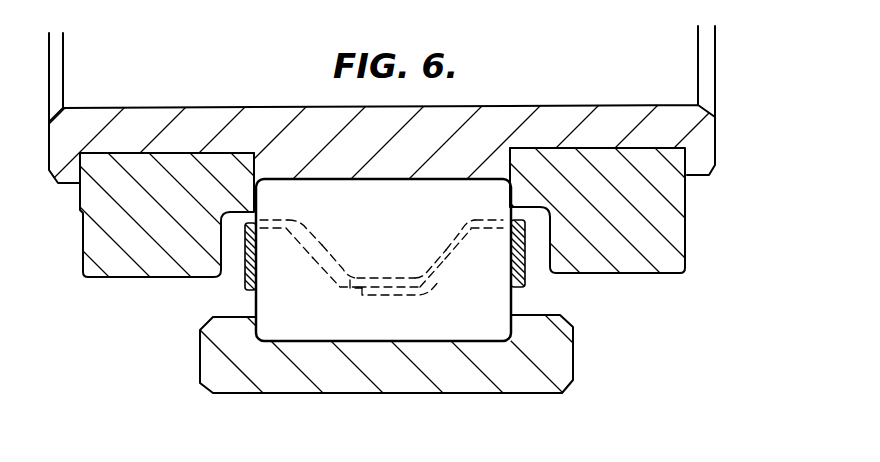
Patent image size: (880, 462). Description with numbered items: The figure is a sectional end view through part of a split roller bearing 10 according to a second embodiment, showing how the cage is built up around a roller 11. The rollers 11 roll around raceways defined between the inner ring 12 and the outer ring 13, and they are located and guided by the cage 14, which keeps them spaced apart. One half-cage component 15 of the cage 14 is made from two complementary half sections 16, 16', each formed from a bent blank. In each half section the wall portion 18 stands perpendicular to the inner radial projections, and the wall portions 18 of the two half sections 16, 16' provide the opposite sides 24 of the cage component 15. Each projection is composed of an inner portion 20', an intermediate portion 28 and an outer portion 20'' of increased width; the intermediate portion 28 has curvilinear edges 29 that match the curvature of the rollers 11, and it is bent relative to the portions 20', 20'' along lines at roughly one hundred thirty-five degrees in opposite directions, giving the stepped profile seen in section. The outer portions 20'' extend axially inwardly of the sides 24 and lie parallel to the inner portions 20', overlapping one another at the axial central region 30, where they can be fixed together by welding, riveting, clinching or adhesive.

The split roller bearing 10 is at (582, 103).
The roller 11 is at (280, 317).
The inner ring 12 is at (555, 357).
The outer ring 13 is at (154, 116).
The cage 14 is at (532, 237).
The half-cage component 15 is at (460, 225).
The half section 16 is at (294, 160).
The half section 16' is at (470, 277).
The wall portion 18 is at (240, 280).
The inner portion of projection 20' is at (239, 143).
The outer portion of projection 20'' is at (316, 365).
The side of cage component 24 is at (528, 278).
The intermediate portion 28 is at (320, 238).
The curvilinear edges 29 is at (452, 238).
The overlapping region 30 is at (393, 300).